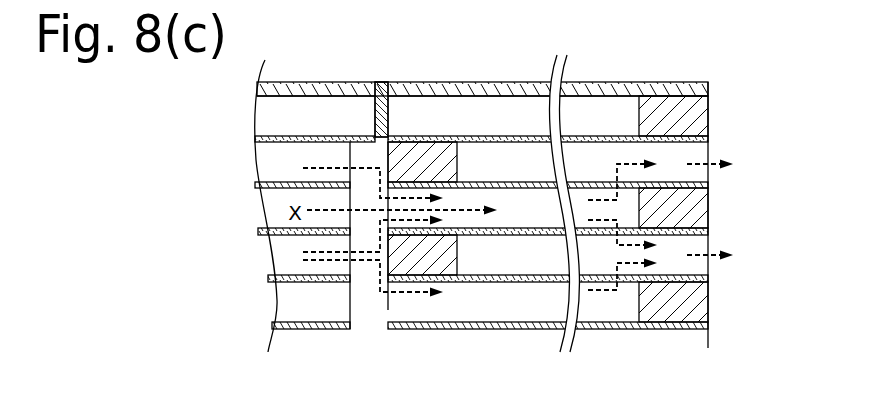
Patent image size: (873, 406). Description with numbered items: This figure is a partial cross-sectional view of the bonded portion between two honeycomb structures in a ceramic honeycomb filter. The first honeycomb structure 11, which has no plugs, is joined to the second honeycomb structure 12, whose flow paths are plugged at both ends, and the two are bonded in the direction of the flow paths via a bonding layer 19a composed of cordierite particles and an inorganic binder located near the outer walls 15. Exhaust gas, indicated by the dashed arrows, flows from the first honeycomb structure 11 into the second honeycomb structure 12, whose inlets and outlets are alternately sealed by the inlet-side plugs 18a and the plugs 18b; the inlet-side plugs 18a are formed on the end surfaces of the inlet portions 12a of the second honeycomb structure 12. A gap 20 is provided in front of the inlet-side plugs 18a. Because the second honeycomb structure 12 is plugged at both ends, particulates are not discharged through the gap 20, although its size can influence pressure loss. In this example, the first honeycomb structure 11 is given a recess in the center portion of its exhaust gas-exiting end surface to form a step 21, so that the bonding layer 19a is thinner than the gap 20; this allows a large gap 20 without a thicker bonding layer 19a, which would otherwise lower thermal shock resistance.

The honeycomb structure 11 is at (283, 107).
The outer wall 15 is at (336, 93).
The bonding layer 19a is at (385, 108).
The honeycomb structure 12 is at (515, 107).
The inlet portion 12a is at (382, 328).
The inlet-side plug 18a is at (443, 258).
The plug 18b is at (665, 308).
The gap 20 is at (394, 312).
The step 21 is at (352, 265).